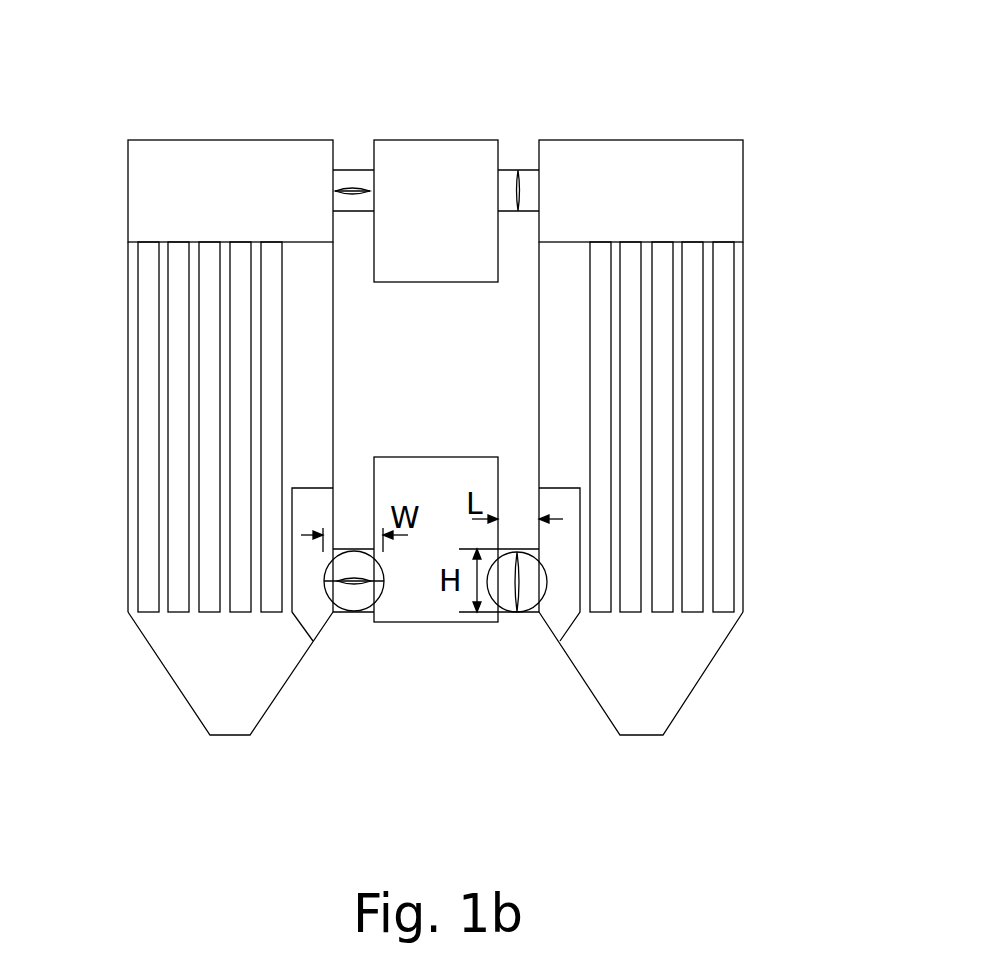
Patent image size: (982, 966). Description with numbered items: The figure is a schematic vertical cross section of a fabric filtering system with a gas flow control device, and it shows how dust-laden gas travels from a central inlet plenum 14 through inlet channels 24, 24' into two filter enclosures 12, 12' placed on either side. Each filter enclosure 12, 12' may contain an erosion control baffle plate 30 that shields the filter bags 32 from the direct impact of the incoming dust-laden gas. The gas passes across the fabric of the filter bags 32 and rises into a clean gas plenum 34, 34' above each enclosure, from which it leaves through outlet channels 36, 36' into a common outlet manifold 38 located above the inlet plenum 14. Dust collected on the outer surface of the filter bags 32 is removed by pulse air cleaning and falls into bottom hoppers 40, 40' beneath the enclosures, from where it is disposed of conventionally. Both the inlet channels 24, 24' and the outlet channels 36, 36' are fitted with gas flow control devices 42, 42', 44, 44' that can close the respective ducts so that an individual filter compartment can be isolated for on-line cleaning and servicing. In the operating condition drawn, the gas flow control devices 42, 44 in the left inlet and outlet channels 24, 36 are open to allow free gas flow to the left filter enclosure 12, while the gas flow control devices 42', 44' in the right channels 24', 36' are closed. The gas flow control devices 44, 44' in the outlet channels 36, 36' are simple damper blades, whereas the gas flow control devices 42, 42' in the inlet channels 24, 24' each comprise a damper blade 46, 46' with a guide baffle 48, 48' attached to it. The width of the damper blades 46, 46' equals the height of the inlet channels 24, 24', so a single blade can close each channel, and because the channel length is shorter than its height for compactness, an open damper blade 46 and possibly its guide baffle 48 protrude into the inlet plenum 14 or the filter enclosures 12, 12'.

The filter enclosure 12 is at (183, 414).
The filter enclosure 12' is at (702, 422).
The inlet plenum 14 is at (418, 457).
The inlet channel 24 is at (327, 598).
The inlet channel 24' is at (518, 599).
The erosion control baffle plate 30 is at (297, 625).
The filter bag 32 is at (138, 477).
The clean gas plenum 34 is at (230, 137).
The clean gas plenum 34' is at (646, 140).
The outlet channel 36 is at (334, 110).
The outlet channel 36' is at (549, 116).
The outlet manifold 38 is at (427, 283).
The bottom hopper 40 is at (223, 704).
The bottom hopper 40' is at (662, 708).
The gas flow control device 42 is at (361, 649).
The gas flow control device 42' is at (478, 628).
The gas flow control device 44 is at (366, 102).
The gas flow control device 44' is at (496, 116).
The damper blade 46 is at (315, 693).
The damper blade 46' is at (529, 700).
The guide baffle 48 is at (361, 669).
The guide baffle 48' is at (492, 667).